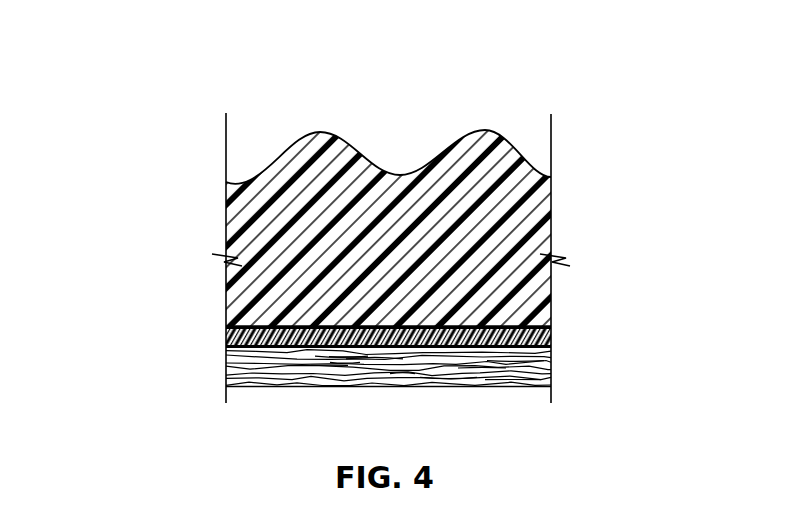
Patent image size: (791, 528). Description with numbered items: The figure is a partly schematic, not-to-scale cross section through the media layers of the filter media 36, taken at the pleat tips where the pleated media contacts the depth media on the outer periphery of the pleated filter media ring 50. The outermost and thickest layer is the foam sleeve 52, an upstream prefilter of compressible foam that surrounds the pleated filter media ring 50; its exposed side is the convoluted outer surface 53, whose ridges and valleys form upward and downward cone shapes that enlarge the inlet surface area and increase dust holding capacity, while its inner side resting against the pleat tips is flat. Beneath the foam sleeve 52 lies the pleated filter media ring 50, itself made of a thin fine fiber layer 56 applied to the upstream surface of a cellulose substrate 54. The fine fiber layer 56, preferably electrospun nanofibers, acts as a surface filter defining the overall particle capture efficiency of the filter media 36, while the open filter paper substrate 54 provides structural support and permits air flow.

The filter media 36 is at (152, 337).
The pleated filter media ring 50 is at (576, 371).
The foam sleeve 52 is at (551, 217).
The convoluted outer surface 53 is at (463, 128).
The substrate 54 is at (500, 370).
The fine fiber layer 56 is at (551, 331).